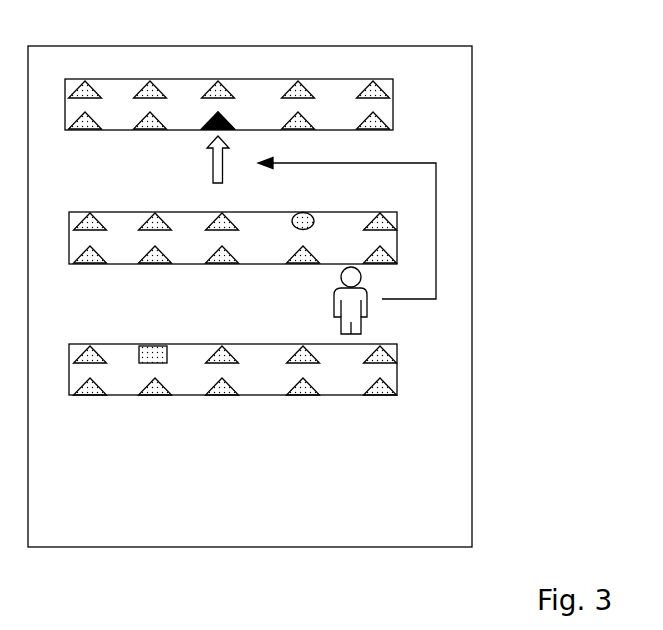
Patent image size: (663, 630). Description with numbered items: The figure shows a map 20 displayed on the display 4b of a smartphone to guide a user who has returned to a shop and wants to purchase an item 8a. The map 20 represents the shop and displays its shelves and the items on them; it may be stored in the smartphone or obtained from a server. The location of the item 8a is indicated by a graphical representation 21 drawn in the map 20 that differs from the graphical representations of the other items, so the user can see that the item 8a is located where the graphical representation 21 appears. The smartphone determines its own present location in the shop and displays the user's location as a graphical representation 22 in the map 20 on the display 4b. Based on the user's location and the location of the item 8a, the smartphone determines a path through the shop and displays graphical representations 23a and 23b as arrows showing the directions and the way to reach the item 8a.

The map 20 is at (450, 70).
The display 4b is at (472, 120).
The item 8a is at (209, 123).
The graphical representation of item 21 is at (228, 119).
The graphical representation of user location 22 is at (366, 319).
The graphical representation (arrow) 23a is at (437, 237).
The graphical representation (arrow) 23b is at (213, 178).